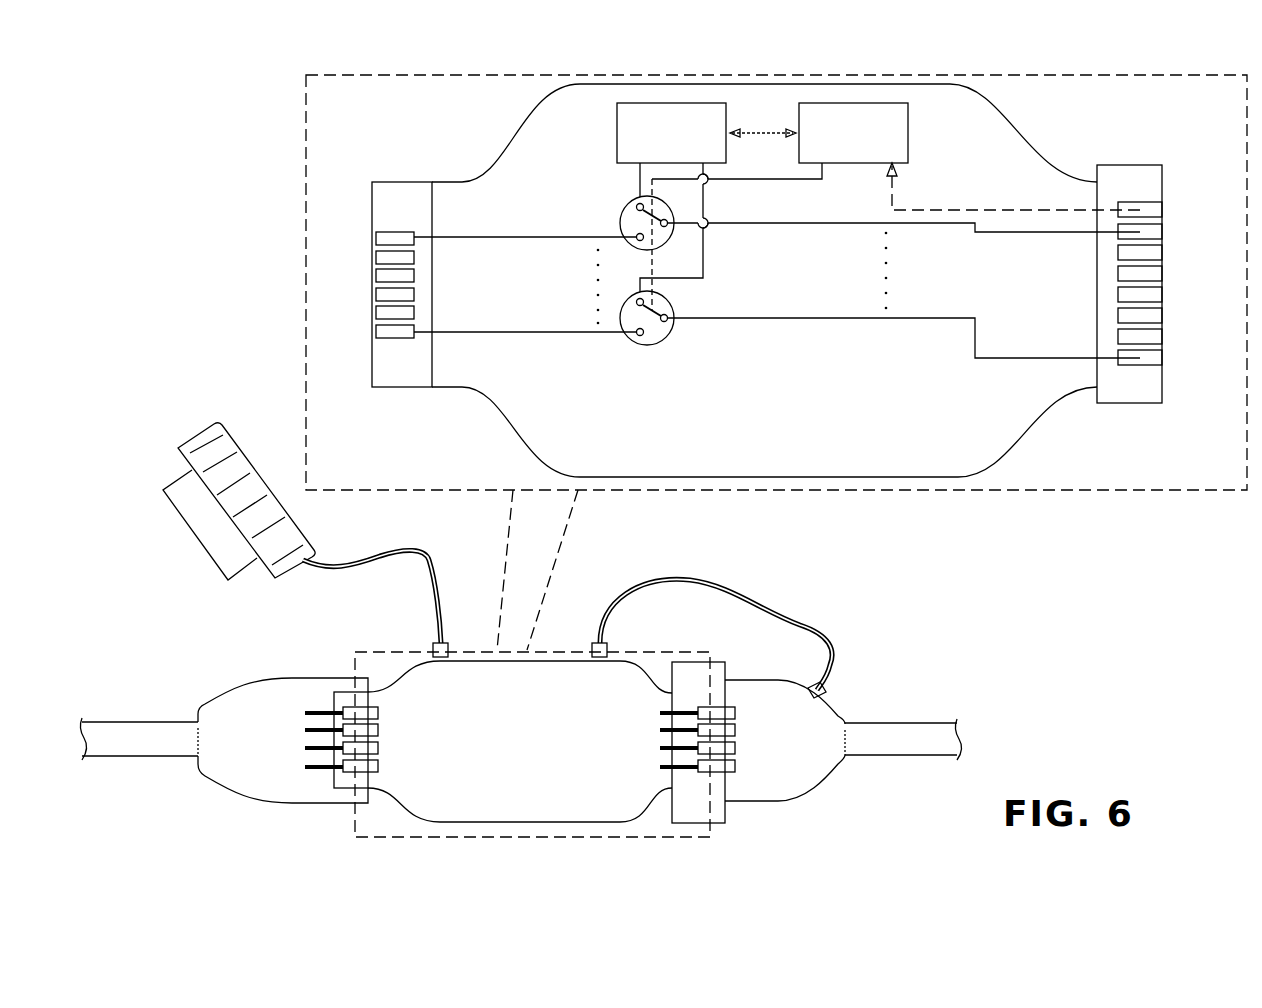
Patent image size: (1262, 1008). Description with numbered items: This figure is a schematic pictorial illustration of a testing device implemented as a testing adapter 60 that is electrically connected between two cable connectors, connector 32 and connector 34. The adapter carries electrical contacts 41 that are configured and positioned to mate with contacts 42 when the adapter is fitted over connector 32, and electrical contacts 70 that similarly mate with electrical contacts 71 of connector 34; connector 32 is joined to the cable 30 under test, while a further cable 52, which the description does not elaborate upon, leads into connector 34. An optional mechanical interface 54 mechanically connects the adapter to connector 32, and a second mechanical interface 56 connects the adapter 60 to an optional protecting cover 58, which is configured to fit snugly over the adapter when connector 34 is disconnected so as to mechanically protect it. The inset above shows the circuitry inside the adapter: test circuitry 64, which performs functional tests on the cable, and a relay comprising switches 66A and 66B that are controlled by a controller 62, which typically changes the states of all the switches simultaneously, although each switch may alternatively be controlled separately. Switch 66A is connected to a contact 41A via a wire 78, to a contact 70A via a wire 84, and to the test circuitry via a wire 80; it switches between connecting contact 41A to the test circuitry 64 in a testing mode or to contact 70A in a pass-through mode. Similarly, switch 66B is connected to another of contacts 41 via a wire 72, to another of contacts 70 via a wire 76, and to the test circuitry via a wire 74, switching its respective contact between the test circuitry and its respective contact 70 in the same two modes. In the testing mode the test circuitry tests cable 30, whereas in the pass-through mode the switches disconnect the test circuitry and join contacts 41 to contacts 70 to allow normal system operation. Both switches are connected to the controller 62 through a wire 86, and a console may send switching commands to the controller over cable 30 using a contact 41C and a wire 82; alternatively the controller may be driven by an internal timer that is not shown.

The cable 30 is at (905, 756).
The connector 32 is at (806, 794).
The connector 34 is at (262, 801).
The electrical contacts 41 is at (1180, 195).
The contact 41A is at (1168, 232).
The contact 41C is at (1162, 210).
The contacts 42 is at (740, 706).
The cable 52 is at (150, 756).
The mechanical interface 54 is at (837, 657).
The mechanical interface 56 is at (428, 568).
The protecting cover 58 is at (200, 546).
The testing adapter 60 is at (1062, 150).
The controller 62 is at (908, 133).
The test circuitry 64 is at (617, 134).
The switch 66A is at (622, 213).
The switch 66B is at (672, 340).
The electrical contacts 70 is at (365, 225).
The contact 70A is at (385, 232).
The electrical contacts 71 is at (303, 706).
The wire 72 is at (858, 318).
The wire 74 is at (704, 258).
The wire 76 is at (533, 332).
The wire 78 is at (1003, 233).
The wire 80 is at (640, 185).
The wire 82 is at (957, 210).
The wire 84 is at (510, 237).
The wire 86 is at (790, 180).